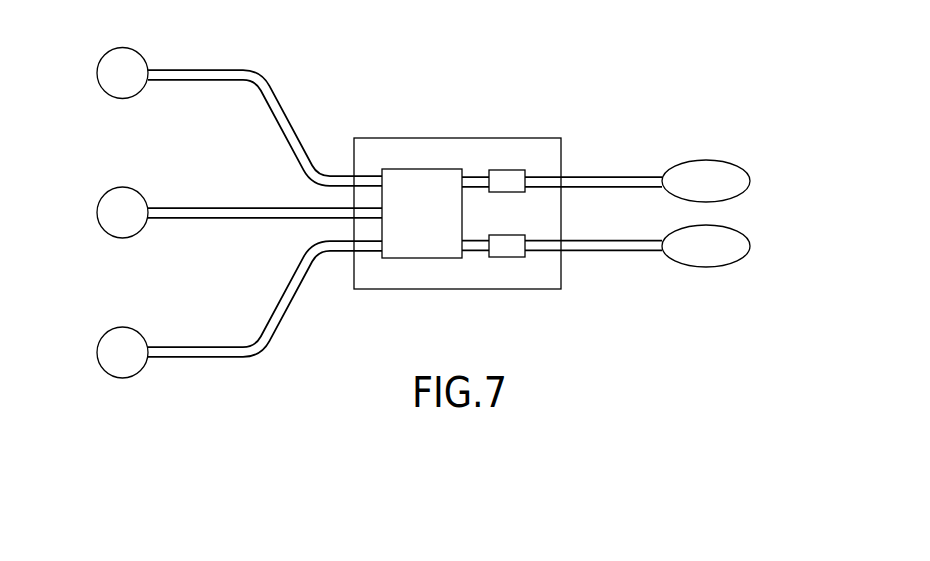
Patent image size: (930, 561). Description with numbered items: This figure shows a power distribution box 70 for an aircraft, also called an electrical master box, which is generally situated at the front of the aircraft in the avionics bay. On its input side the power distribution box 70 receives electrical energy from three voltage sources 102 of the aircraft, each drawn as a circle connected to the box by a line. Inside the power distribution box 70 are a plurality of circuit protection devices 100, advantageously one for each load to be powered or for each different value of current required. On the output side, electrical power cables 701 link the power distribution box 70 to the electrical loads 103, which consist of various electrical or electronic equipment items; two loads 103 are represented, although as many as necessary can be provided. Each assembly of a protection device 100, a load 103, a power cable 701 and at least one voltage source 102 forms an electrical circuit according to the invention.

The power distribution box 70 is at (495, 85).
The protection device 100 is at (507, 178).
The voltage source 102 is at (115, 343).
The electrical load 103 is at (720, 180).
The electrical power cable 701 is at (607, 182).